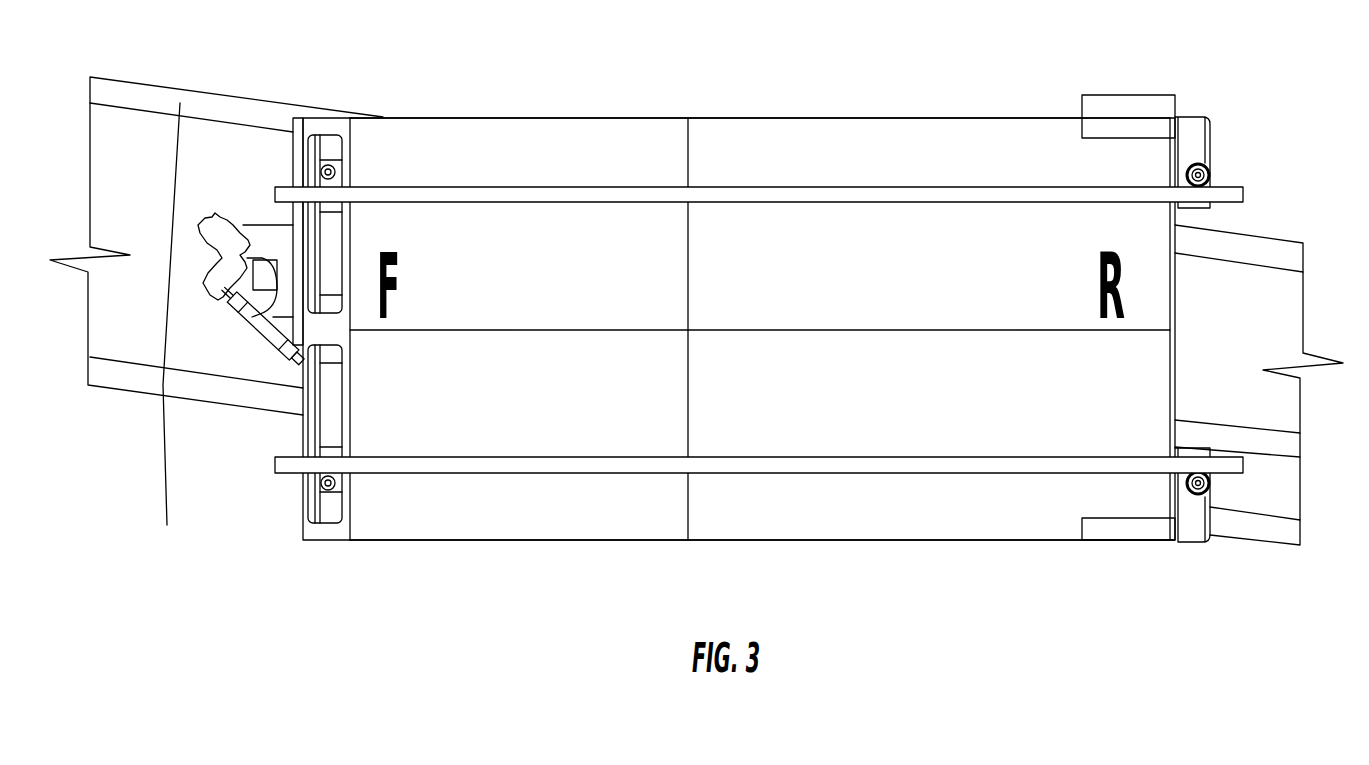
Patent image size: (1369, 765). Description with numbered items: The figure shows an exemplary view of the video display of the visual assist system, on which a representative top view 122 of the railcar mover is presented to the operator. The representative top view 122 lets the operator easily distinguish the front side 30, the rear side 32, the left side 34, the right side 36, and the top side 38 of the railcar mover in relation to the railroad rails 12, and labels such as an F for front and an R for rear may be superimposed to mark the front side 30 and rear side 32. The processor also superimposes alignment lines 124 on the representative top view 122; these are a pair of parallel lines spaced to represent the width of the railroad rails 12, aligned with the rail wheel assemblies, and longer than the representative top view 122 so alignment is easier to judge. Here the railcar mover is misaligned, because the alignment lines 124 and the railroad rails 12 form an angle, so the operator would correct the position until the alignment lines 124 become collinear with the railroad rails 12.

The railroad rails 12 is at (205, 392).
The front side 30 is at (303, 372).
The rear side 32 is at (1175, 288).
The left side 34 is at (543, 542).
The right side 36 is at (717, 117).
The top side 38 is at (965, 518).
The representative top view 122 is at (748, 510).
The alignment lines 124 is at (492, 203).